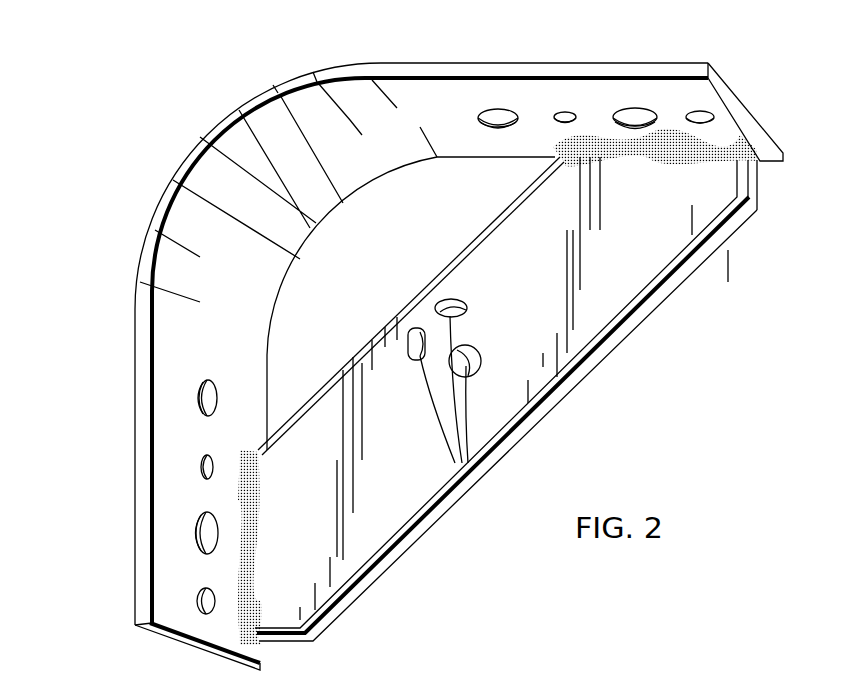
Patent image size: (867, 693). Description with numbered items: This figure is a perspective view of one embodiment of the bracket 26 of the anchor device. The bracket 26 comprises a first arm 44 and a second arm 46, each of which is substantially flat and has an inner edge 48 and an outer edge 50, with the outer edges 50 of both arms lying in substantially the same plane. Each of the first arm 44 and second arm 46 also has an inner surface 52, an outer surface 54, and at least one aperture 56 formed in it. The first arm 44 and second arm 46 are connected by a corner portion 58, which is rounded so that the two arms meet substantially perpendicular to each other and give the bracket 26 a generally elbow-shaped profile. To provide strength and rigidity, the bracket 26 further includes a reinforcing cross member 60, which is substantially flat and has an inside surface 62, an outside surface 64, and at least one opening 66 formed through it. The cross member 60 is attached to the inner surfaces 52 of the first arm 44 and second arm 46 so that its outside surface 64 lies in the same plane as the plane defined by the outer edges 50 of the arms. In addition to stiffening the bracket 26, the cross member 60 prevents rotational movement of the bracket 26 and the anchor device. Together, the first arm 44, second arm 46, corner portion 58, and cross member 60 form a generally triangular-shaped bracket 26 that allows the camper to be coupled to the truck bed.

The bracket 26 is at (183, 104).
The first arm 44 is at (178, 487).
The second arm 46 is at (607, 108).
The inner edge 48 is at (472, 66).
The outer edge 50 is at (488, 158).
The inner surface 52 is at (585, 87).
The outer surface 54 is at (745, 103).
The aperture 56 is at (507, 116).
The corner portion 58 is at (218, 178).
The cross member 60 is at (622, 261).
The inside surface 62 is at (398, 503).
The outside surface 64 is at (580, 410).
The opening 66 is at (453, 460).